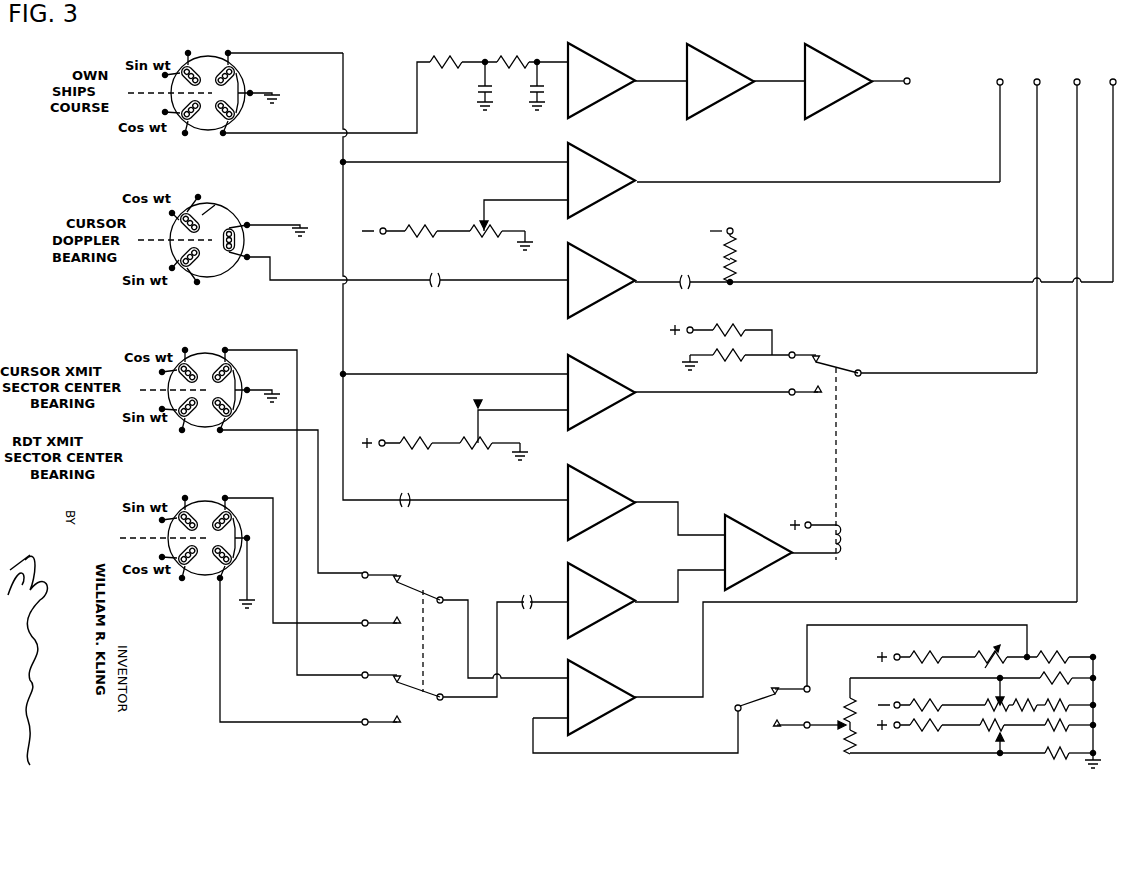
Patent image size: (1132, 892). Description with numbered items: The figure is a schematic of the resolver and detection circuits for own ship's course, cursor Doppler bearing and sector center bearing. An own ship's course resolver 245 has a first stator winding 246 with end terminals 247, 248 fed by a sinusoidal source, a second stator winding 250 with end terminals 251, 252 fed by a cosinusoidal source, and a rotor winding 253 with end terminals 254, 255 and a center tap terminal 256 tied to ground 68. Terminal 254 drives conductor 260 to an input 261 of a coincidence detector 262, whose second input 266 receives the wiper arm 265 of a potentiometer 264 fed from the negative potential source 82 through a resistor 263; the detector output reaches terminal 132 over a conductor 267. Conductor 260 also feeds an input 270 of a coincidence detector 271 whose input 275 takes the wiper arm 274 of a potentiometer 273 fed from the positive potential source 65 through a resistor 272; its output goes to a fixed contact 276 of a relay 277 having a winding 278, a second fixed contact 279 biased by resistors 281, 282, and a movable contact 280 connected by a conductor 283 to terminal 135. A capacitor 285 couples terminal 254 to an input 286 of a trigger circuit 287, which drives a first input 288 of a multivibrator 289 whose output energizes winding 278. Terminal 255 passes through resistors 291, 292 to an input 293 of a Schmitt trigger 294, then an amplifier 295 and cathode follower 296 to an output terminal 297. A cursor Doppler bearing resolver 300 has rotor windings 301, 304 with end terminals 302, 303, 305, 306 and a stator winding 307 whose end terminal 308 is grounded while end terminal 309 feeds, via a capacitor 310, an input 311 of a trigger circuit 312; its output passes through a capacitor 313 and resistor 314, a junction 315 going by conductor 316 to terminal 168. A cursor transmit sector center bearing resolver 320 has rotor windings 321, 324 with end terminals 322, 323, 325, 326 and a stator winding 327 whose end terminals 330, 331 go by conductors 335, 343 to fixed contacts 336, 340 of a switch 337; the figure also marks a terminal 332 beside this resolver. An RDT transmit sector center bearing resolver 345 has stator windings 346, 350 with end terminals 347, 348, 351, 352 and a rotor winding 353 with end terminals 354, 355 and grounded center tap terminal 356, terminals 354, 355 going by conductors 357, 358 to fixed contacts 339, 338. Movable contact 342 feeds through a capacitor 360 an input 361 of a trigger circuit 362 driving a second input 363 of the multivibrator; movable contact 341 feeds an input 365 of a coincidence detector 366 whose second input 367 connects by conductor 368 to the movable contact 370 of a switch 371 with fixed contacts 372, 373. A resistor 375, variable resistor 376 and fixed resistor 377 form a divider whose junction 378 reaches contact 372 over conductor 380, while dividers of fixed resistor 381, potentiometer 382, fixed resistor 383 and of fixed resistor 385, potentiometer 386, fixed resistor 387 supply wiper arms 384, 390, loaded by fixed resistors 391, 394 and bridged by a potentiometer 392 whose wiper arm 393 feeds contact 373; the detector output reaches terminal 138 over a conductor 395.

The positive potential source 65 is at (893, 730).
The ground 68 is at (1100, 763).
The negative potential source 82 is at (893, 702).
The terminal 132 is at (1000, 78).
The terminal 135 is at (1038, 78).
The terminal 138 is at (1077, 78).
The terminal 168 is at (1113, 78).
The own ship's course resolver 245 is at (220, 130).
The first stator winding 246 is at (203, 58).
The end terminal 247 is at (186, 51).
The end terminal 248 is at (163, 76).
The second stator winding 250 is at (178, 126).
The end terminal 251 is at (163, 112).
The end terminal 252 is at (186, 136).
The rotor winding 253 is at (236, 70).
The end terminal 254 is at (230, 50).
The end terminal 255 is at (228, 133).
The center tap terminal 256 is at (253, 92).
The conductor 260 is at (343, 106).
The input 261 is at (566, 160).
The coincidence detector 262 is at (612, 170).
The resistor 263 is at (430, 228).
The potentiometer 264 is at (500, 236).
The wiper arm 265 is at (488, 222).
The second input 266 is at (566, 198).
The conductor 267 is at (790, 180).
The input 270 is at (566, 372).
The coincidence detector 271 is at (612, 380).
The resistor 272 is at (418, 448).
The potentiometer 273 is at (486, 448).
The wiper arm 274 is at (480, 415).
The input 275 is at (566, 408).
The fixed contact 276 is at (806, 396).
The relay 277 is at (866, 464).
The winding 278 is at (843, 538).
The second fixed contact 279 is at (812, 352).
The movable contact 280 is at (857, 369).
The resistor 281 is at (730, 328).
The resistor 282 is at (745, 360).
The conductor 283 is at (1000, 372).
The capacitor 285 is at (412, 496).
The input 286 is at (566, 508).
The trigger circuit 287 is at (610, 510).
The first input 288 is at (722, 528).
The multivibrator 289 is at (770, 548).
The resistor 291 is at (444, 57).
The resistor 292 is at (512, 57).
The input 293 is at (540, 58).
The Schmitt trigger 294 is at (605, 58).
The amplifier 295 is at (715, 55).
The cathode follower 296 is at (832, 55).
The output terminal 297 is at (908, 78).
The cursor Doppler bearing resolver 300 is at (238, 214).
The first rotor winding 301 is at (215, 205).
The end terminal 302 is at (197, 196).
The end terminal 303 is at (170, 213).
The second rotor winding 304 is at (196, 284).
The end terminal 305 is at (204, 282).
The end terminal 306 is at (171, 267).
The stator winding 307 is at (249, 224).
The end terminal 308 is at (246, 232).
The end terminal 309 is at (247, 260).
The capacitor 310 is at (432, 274).
The input 311 is at (566, 288).
The trigger circuit 312 is at (600, 252).
The capacitor 313 is at (684, 274).
The resistor 314 is at (736, 246).
The junction 315 is at (736, 270).
The conductor 316 is at (906, 280).
The cursor transmit sector center bearing resolver 320 is at (208, 352).
The first rotor winding 321 is at (162, 370).
The end terminal 322 is at (185, 348).
The end terminal 323 is at (118, 360).
The second rotor winding 324 is at (181, 432).
The end terminal 325 is at (185, 434).
The end terminal 326 is at (160, 409).
The stator winding 327 is at (205, 390).
The end terminal 330 is at (227, 350).
The end terminal 331 is at (221, 433).
The resolver ground terminal 332 is at (250, 388).
The conductor 335 is at (297, 478).
The fixed contact 336 is at (366, 672).
The switch or relay 337 is at (439, 641).
The fixed contact 338 is at (362, 719).
The fixed contact 339 is at (378, 620).
The fixed contact 340 is at (372, 570).
The movable contact 341 is at (418, 586).
The movable contact 342 is at (414, 688).
The conductor 343 is at (318, 532).
The RDT transmit sector center bearing resolver 345 is at (190, 492).
The first stator winding 346 is at (175, 500).
The end terminal 347 is at (182, 490).
The end terminal 348 is at (160, 520).
The second stator winding 350 is at (178, 572).
The end terminal 351 is at (183, 581).
The end terminal 352 is at (160, 557).
The rotor winding 353 is at (183, 538).
The end terminal 354 is at (226, 496).
The end terminal 355 is at (219, 582).
The center tap terminal 356 is at (249, 536).
The conductor 357 is at (273, 630).
The conductor 358 is at (220, 676).
The capacitor 360 is at (520, 596).
The input 361 is at (566, 600).
The trigger circuit 362 is at (602, 578).
The second input 363 is at (700, 568).
The input 365 is at (566, 676).
The coincidence detector 366 is at (626, 692).
The second input 367 is at (566, 716).
The conductor 368 is at (520, 750).
The movable contact 370 is at (750, 698).
The switch 371 is at (803, 707).
The fixed contact 372 is at (787, 686).
The fixed contact 373 is at (790, 730).
The resistor 375 is at (926, 654).
The variable resistor 376 is at (980, 652).
The fixed resistor 377 is at (1066, 640).
The junction 378 is at (1028, 650).
The conductor 380 is at (900, 625).
The fixed resistor 381 is at (930, 702).
The potentiometer 382 is at (1018, 704).
The fixed resistor 383 is at (1056, 704).
The wiper arm 384 is at (992, 700).
The fixed resistor 385 is at (928, 732).
The potentiometer 386 is at (985, 732).
The fixed resistor 387 is at (1055, 732).
The wiper arm 390 is at (1003, 740).
The fixed resistor 391 is at (1044, 676).
The potentiometer 392 is at (848, 700).
The wiper arm 393 is at (840, 730).
The fixed resistor 394 is at (1050, 760).
The conductor 395 is at (928, 600).